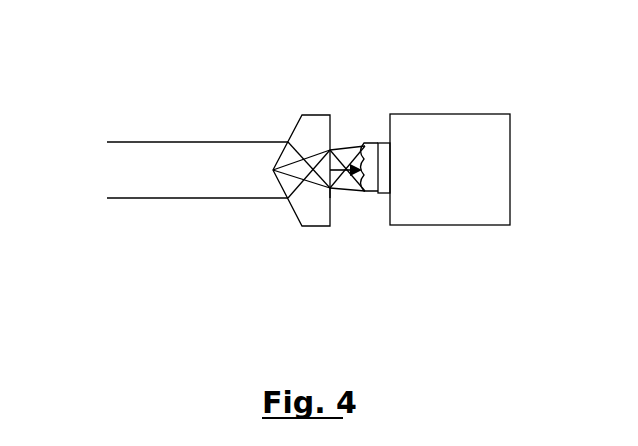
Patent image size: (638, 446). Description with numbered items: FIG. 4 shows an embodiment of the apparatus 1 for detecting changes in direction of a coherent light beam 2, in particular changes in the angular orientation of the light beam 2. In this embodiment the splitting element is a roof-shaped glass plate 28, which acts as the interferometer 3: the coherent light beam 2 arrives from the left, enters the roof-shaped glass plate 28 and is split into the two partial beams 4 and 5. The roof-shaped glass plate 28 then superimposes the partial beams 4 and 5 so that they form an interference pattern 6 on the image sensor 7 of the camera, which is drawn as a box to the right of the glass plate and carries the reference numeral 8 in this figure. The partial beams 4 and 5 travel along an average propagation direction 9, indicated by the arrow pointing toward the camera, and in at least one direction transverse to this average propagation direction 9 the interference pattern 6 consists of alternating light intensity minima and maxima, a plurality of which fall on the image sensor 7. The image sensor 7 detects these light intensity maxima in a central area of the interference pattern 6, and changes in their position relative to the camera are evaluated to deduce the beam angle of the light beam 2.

The apparatus 1 is at (318, 83).
The coherent light beam 2 is at (167, 141).
The interferometer 3 is at (299, 109).
The partial beam 4 is at (338, 143).
The partial beam 5 is at (338, 199).
The interference pattern 6 is at (362, 151).
The image sensor 7 is at (383, 143).
The camera 8 is at (432, 114).
The average propagation direction 9 is at (344, 178).
The roof-shaped glass plate 28 is at (290, 121).